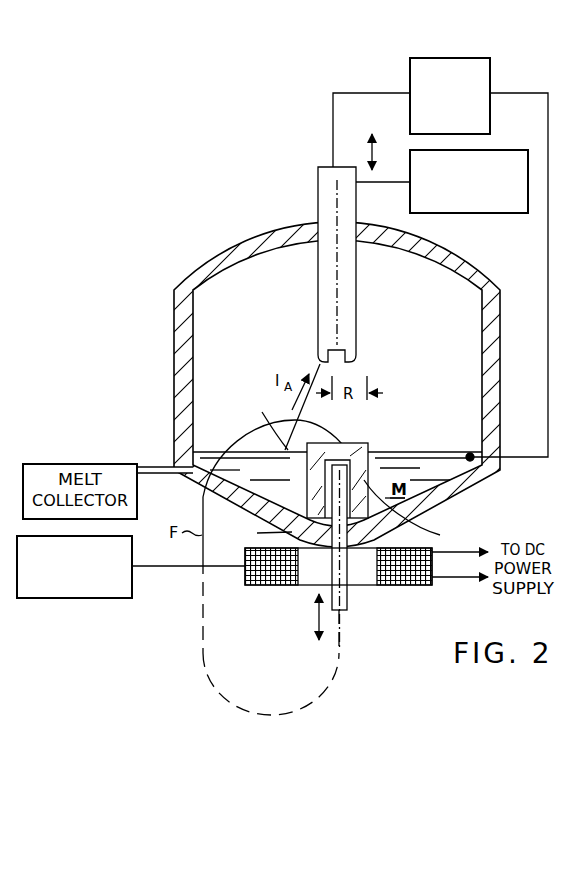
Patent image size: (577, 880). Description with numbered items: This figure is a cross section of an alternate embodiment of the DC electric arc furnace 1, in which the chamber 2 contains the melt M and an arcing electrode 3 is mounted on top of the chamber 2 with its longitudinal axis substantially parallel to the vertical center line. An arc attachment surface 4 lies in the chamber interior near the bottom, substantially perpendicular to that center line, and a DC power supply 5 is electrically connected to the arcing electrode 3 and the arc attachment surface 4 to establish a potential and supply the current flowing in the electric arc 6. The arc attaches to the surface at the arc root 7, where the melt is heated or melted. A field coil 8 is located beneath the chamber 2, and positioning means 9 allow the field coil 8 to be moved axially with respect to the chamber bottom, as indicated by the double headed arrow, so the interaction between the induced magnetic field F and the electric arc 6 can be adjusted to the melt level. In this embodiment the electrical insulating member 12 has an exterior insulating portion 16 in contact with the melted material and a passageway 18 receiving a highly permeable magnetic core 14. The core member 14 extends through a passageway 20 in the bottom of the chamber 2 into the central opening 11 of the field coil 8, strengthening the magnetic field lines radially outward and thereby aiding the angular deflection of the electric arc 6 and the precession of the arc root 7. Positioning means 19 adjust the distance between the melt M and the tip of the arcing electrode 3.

The DC electric arc furnace 1 is at (195, 222).
The chamber 2 is at (260, 297).
The arcing electrode 3 is at (357, 195).
The arc attachment surface 4 is at (433, 452).
The DC power supply 5 is at (490, 62).
The electric arc 6 is at (320, 362).
The arc root 7 is at (268, 423).
The field coil 8 is at (396, 588).
The positioning means 9 is at (104, 598).
The central opening 11 is at (312, 572).
The electrical insulating member 12 is at (348, 433).
The highly permeable magnetic core 14 is at (349, 600).
The exterior insulating portion 16 is at (357, 443).
The passageway 18 is at (400, 524).
The positioning means 19 is at (499, 214).
The passageway 20 is at (260, 535).